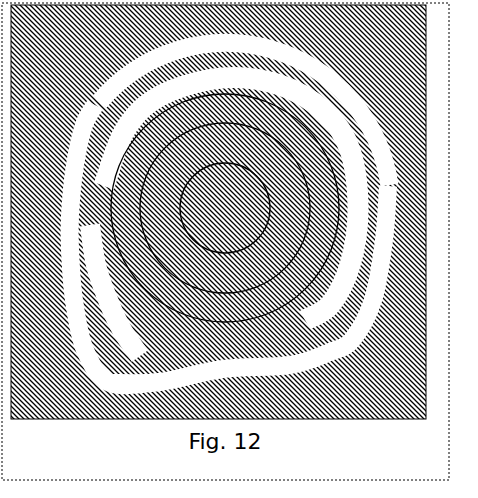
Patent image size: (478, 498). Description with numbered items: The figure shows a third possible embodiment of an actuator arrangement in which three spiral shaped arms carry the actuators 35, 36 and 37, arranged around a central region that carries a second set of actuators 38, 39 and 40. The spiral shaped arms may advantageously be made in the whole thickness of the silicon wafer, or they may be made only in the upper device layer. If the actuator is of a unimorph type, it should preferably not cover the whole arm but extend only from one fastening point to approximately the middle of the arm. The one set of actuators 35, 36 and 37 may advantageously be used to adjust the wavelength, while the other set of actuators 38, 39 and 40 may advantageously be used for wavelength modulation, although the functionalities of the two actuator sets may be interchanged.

The actuator 35 is at (300, 63).
The actuator 36 is at (247, 388).
The actuator 37 is at (62, 148).
The actuator 38 is at (177, 127).
The actuator 39 is at (142, 253).
The actuator 40 is at (228, 208).